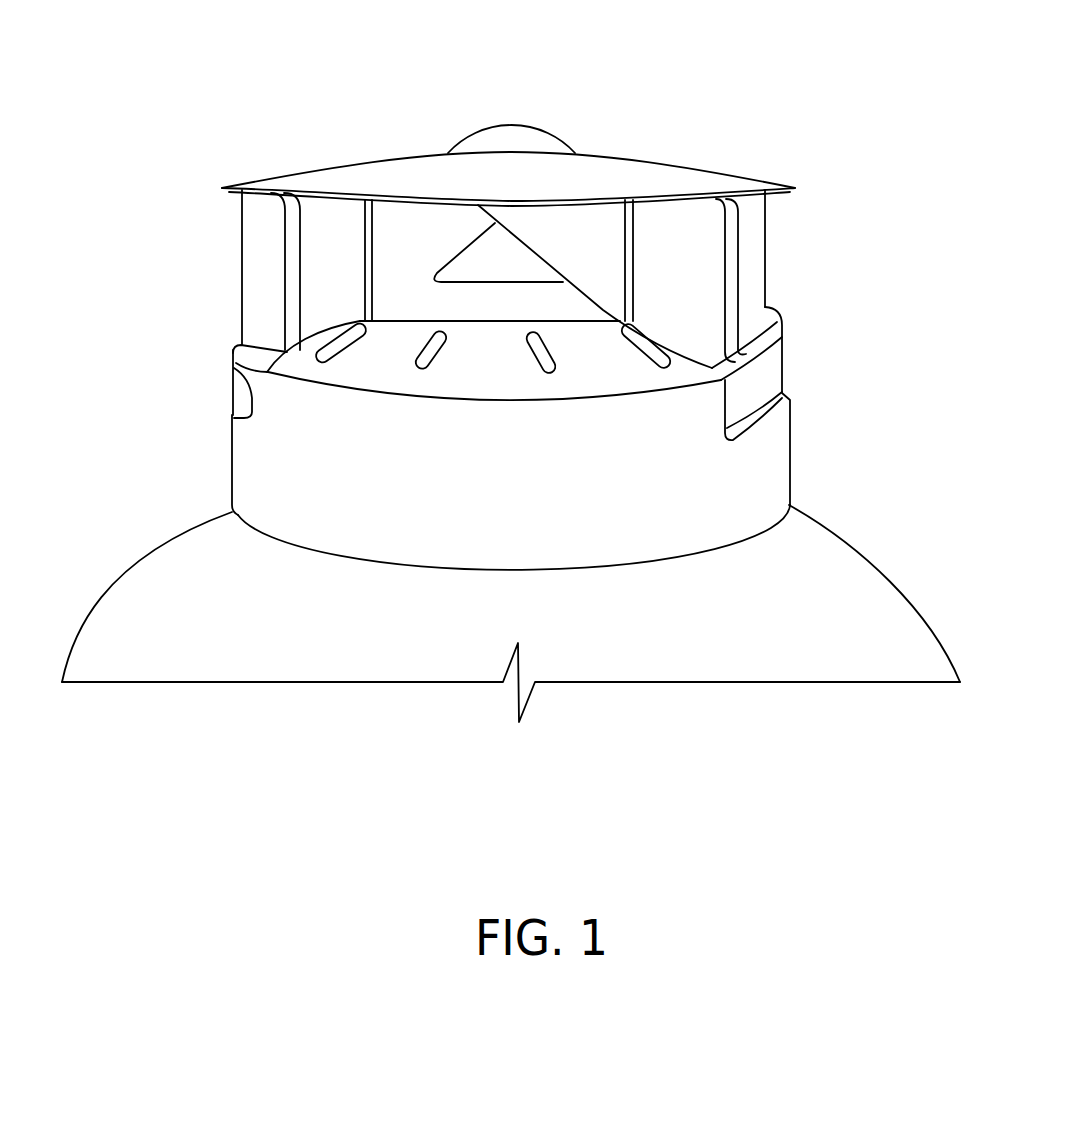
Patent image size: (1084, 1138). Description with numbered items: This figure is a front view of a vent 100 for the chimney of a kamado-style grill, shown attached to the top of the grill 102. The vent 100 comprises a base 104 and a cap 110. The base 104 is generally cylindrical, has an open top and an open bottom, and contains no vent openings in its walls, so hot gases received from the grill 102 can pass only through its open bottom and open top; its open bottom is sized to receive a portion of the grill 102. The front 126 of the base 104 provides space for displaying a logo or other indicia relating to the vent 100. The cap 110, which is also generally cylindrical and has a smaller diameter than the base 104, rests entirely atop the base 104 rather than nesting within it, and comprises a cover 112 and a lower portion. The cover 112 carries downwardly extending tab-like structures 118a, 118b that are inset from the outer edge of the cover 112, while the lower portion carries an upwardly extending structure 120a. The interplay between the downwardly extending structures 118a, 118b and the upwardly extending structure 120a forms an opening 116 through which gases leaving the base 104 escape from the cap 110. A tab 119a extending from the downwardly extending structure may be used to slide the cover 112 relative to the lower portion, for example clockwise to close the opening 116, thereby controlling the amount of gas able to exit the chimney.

The vent 100 is at (149, 111).
The grill 102 is at (188, 583).
The base 104 is at (215, 478).
The cap 110 is at (794, 287).
The cover 112 is at (672, 173).
The opening 116 is at (505, 265).
The downwardly extending structure 118a is at (577, 232).
The downwardly extending structure 118b is at (462, 232).
The tab 119a is at (732, 238).
The upwardly extending structure 120a is at (260, 292).
The front 126 is at (313, 480).